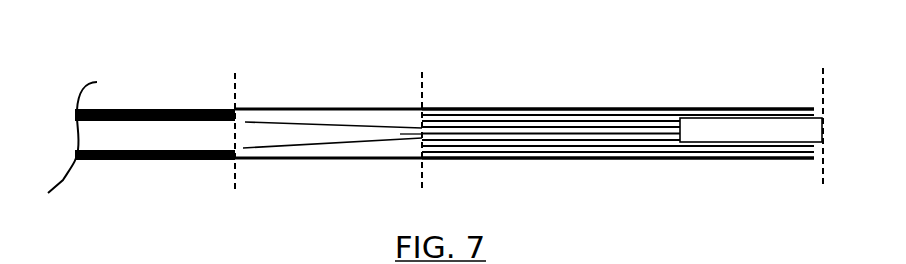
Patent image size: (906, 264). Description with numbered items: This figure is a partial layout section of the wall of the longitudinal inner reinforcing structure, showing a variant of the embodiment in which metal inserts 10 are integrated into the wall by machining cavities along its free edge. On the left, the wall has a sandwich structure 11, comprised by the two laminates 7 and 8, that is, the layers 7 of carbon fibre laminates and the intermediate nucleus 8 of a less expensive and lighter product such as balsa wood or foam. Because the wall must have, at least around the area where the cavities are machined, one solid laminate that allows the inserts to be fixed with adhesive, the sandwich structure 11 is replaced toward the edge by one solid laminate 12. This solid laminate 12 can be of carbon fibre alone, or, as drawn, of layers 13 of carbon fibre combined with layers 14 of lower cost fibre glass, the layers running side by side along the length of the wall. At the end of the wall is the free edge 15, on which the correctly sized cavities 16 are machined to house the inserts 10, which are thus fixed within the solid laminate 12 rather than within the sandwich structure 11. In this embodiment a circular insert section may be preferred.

The layers of carbon fibre laminates 7 is at (137, 109).
The intermediate nucleus 8 is at (202, 137).
The metal inserts 10 is at (732, 131).
The sandwich structure 11 is at (147, 175).
The solid laminate 12 is at (660, 92).
The layers of carbon fibre 13 is at (473, 117).
The layers of lower cost fibre glass 14 is at (573, 153).
The free edge 15 is at (802, 87).
The cavities 16 is at (782, 146).